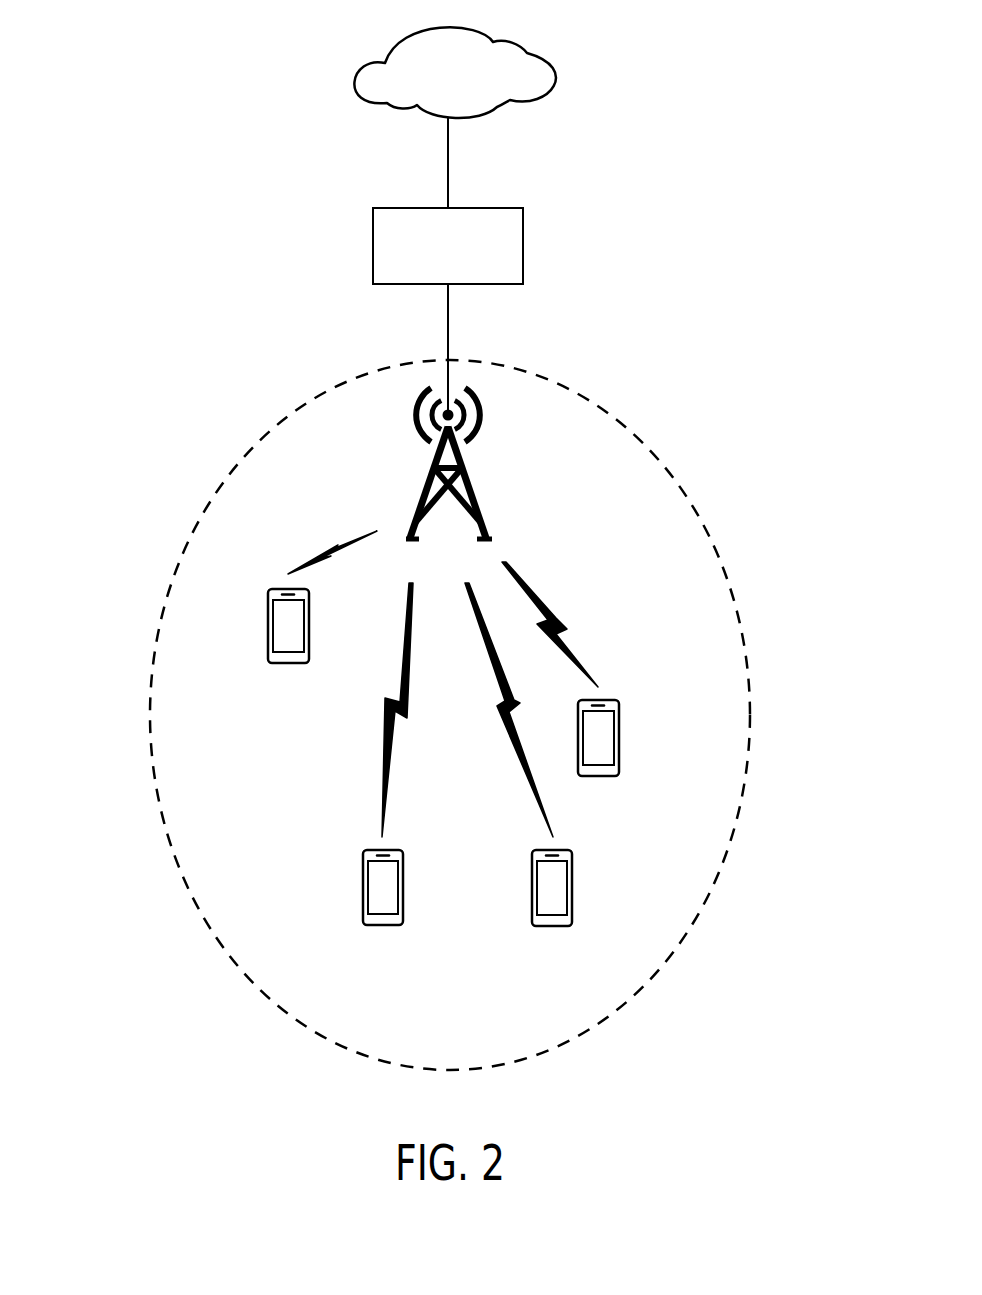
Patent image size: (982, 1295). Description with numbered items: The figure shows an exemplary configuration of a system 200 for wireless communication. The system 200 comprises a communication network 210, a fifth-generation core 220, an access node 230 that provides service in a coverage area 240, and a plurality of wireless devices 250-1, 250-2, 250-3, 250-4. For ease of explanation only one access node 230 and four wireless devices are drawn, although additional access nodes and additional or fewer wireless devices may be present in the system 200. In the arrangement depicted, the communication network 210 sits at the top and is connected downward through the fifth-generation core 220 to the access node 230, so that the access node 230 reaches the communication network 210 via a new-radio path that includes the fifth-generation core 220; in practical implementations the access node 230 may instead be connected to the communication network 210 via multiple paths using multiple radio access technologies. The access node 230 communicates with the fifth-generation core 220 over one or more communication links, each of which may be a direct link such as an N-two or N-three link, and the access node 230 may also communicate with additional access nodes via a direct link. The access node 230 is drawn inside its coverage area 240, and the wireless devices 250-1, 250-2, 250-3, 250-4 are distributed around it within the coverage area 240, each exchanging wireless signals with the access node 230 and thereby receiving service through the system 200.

The system 200 is at (146, 67).
The communication network 210 is at (557, 72).
The 5G core 220 is at (373, 222).
The access node 230 is at (432, 462).
The coverage area 240 is at (176, 862).
The wireless device 250-1 is at (309, 636).
The wireless device 250-2 is at (404, 899).
The wireless device 250-3 is at (573, 899).
The wireless device 250-4 is at (620, 748).